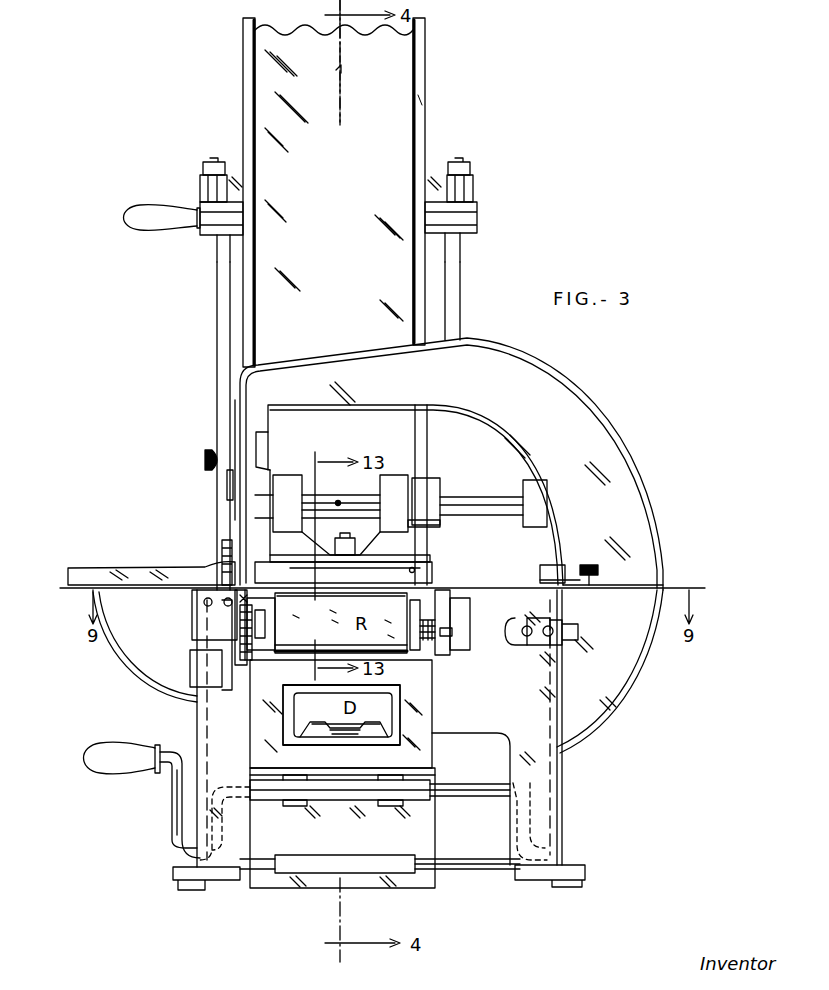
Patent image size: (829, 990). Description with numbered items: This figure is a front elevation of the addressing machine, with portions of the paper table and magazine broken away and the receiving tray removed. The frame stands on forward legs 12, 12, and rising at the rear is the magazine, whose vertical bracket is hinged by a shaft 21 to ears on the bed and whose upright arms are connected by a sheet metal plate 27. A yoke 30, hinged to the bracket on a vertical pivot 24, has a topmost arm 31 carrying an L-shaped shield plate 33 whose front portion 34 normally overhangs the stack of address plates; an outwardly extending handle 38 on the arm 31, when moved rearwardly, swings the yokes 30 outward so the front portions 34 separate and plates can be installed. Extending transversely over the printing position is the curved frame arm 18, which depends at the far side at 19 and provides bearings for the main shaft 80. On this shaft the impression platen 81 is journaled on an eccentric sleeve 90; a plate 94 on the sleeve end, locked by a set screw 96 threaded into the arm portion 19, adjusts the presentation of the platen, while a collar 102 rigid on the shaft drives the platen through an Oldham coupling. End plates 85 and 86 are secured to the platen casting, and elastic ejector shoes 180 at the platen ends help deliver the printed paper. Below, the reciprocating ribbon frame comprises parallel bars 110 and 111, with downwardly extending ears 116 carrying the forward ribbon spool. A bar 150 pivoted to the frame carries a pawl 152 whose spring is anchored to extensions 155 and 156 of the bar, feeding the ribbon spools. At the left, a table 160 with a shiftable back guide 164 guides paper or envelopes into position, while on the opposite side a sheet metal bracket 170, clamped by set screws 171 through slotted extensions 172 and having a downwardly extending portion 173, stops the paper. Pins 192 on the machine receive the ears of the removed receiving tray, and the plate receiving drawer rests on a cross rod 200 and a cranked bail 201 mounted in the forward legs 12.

The forward legs 12 is at (379, 740).
The curved frame arm 18 is at (451, 464).
The depending portion of the frame arm 19 is at (240, 413).
The shaft 21 is at (341, 714).
The vertical pivot 24 is at (212, 190).
The sheet metal plate 27 is at (334, 160).
The yokes 30 is at (217, 322).
The topmost arm of yoke 31 is at (228, 238).
The shield plate 33 is at (243, 82).
The front portions of the shields 34 is at (422, 106).
The handle 38 is at (148, 222).
The main shaft 80 is at (495, 497).
The impression platen 81 is at (343, 557).
The end plate 85 is at (275, 476).
The end plate 86 is at (412, 478).
The eccentric sleeve 90 is at (341, 498).
The plate 94 is at (230, 480).
The set screw 96 is at (210, 460).
The collar 102 is at (432, 527).
The parallel bar 110 is at (225, 618).
The parallel bar 111 is at (452, 622).
The downwardly extending ears 116 is at (448, 652).
The bar 150 is at (195, 600).
The pawl 152 is at (248, 668).
The extension of the bar 155 is at (222, 556).
The extension of the bar 156 is at (230, 690).
The table 160 is at (85, 590).
The shiftable back guide 164 is at (118, 568).
The sheet metal bracket 170 is at (552, 565).
The set screws 171 is at (592, 565).
The slotted extensions 172 is at (640, 585).
The downwardly extending portion 173 is at (545, 580).
The elastic strips or shoes 180 is at (414, 570).
The pins 192 is at (578, 632).
The cross rod 200 is at (474, 873).
The cranked bail 201 is at (472, 798).